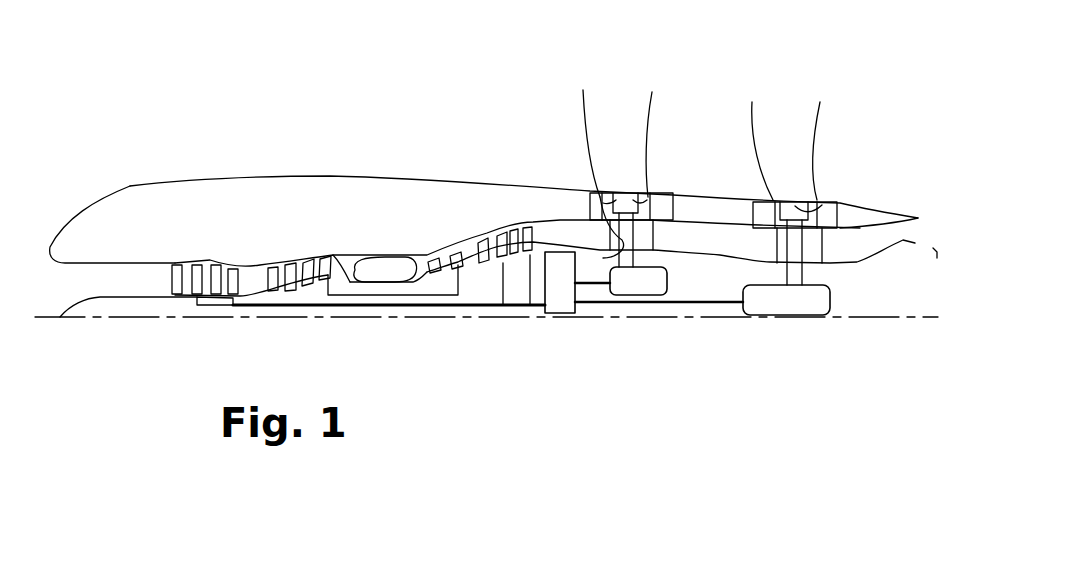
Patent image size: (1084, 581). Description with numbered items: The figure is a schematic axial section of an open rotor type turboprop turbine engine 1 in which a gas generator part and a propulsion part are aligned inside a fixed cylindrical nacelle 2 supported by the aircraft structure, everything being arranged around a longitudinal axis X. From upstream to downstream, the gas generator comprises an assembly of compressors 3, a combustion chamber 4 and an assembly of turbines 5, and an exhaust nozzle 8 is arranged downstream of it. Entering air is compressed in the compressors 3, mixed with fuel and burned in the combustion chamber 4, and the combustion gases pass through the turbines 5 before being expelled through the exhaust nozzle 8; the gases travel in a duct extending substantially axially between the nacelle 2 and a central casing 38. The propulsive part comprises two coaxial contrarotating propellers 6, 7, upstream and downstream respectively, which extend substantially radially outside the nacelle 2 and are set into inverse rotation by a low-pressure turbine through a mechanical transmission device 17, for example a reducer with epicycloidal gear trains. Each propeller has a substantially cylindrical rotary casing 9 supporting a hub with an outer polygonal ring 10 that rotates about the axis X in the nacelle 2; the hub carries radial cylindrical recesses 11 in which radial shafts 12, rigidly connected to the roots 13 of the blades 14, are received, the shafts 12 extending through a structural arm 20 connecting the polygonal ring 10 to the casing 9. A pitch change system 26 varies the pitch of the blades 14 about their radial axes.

The turbine engine 1 is at (162, 145).
The nacelle 2 is at (332, 198).
The assembly of compressors 3 is at (280, 237).
The combustion chamber 4 is at (382, 270).
The assembly of turbines 5 is at (488, 226).
The central casing 38 is at (446, 247).
The upstream propeller 6 is at (633, 80).
The downstream propeller 7 is at (789, 100).
The exhaust nozzle 8 is at (917, 257).
The rotary casing 9 is at (680, 262).
The polygonal ring 10 is at (600, 203).
The radial cylindrical recesses 11 is at (660, 212).
The radial shafts 12 is at (568, 203).
The blade roots 13 is at (658, 197).
The blades 14 is at (593, 117).
The mechanical transmission device 17 is at (557, 293).
The structural arm 20 is at (647, 232).
The pitch change system 26 is at (624, 283).
The longitudinal axis X is at (113, 318).